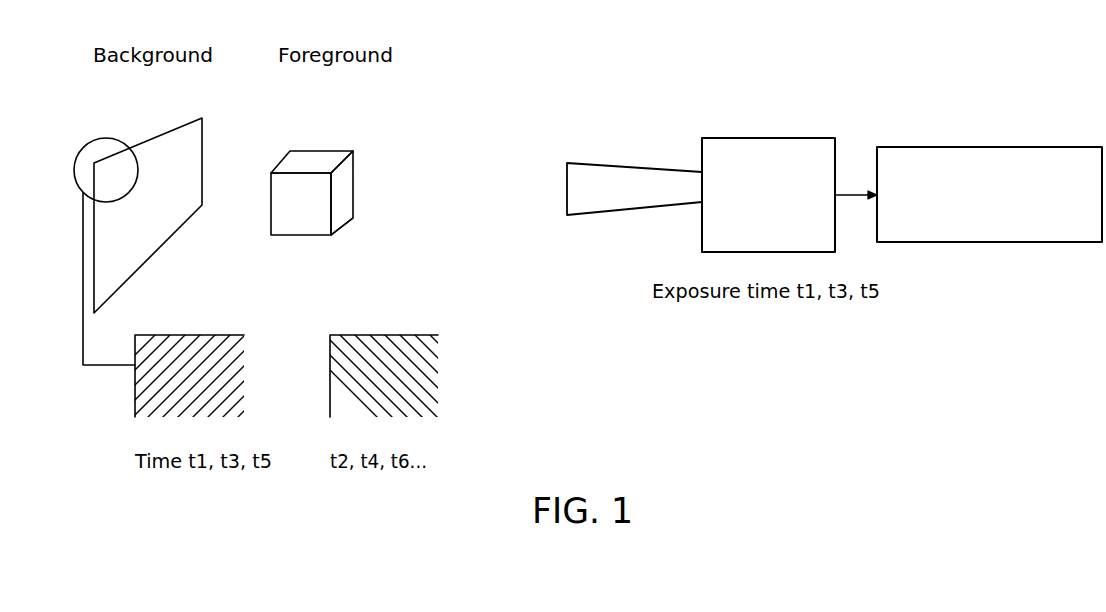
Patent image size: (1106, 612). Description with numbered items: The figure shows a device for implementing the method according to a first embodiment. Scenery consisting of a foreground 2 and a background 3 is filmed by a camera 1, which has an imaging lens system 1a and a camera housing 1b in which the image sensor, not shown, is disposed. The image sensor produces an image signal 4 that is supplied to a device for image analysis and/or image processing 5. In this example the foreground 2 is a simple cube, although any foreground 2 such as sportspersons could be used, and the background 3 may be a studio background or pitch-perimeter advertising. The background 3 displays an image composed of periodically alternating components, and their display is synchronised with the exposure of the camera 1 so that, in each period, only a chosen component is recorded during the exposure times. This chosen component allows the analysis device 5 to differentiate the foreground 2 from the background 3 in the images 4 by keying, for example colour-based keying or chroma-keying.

The camera 1 is at (807, 138).
The imaging lens system 1a is at (634, 167).
The camera housing 1b is at (735, 138).
The foreground 2 is at (321, 151).
The background 3 is at (202, 143).
The image signal 4 is at (853, 192).
The device for image analysis and/or image processing 5 is at (987, 147).